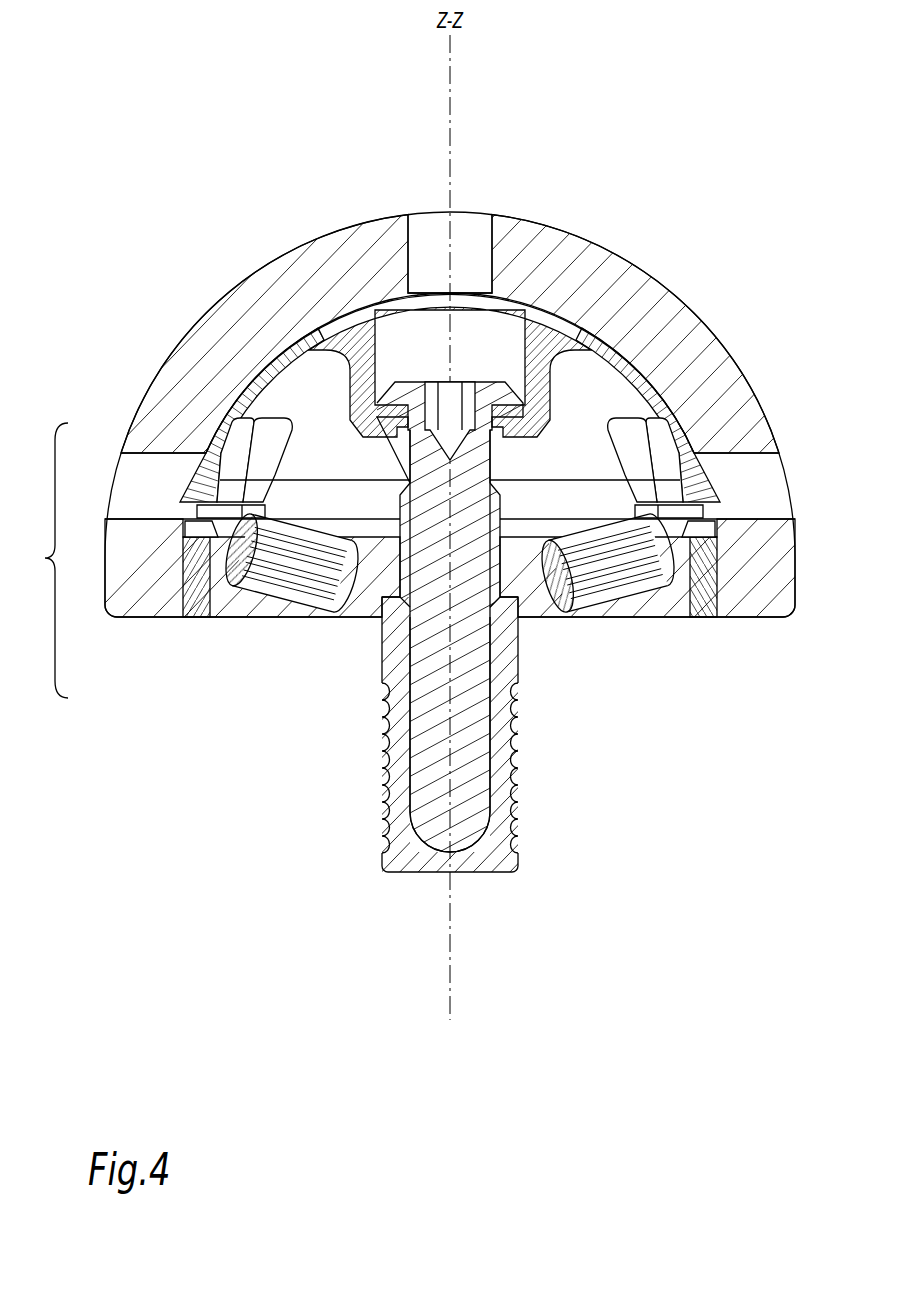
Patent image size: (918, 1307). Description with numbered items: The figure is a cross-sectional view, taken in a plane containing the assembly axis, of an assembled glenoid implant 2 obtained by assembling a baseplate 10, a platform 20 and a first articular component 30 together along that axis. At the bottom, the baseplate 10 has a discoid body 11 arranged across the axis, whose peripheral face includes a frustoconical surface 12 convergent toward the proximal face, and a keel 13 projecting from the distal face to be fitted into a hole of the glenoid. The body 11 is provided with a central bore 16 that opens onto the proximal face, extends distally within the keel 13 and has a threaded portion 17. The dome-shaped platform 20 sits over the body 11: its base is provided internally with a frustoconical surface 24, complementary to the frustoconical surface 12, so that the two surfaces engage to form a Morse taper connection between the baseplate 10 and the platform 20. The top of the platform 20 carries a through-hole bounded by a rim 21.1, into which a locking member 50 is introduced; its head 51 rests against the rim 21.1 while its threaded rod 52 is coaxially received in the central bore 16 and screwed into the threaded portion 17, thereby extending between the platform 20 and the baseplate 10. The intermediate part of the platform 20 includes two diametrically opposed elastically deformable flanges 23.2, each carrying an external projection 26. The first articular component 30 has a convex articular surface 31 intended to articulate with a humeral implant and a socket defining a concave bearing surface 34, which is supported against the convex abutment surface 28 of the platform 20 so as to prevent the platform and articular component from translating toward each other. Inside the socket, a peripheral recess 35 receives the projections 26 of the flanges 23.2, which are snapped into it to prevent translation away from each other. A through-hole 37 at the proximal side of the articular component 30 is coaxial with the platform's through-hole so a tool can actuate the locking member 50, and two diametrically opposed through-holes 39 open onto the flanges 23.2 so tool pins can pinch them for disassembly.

The glenoid implant 2 is at (47, 560).
The baseplate 10 is at (199, 601).
The body 11 is at (350, 608).
The frustoconical surface 12 is at (677, 602).
The keel 13 is at (387, 862).
The central bore 16 is at (516, 521).
The threaded portion 17 is at (485, 610).
The platform 20 is at (171, 572).
The rim 21.1 is at (510, 427).
The flange 23.2 is at (223, 420).
The frustoconical surface 24 is at (637, 607).
The projection 26 is at (717, 500).
The convex abutment surface 28 is at (325, 323).
The first articular component 30 is at (138, 403).
The convex articular surface 31 is at (605, 243).
The concave bearing surface 34 is at (357, 326).
The recess 35 is at (723, 478).
The through-hole 37 is at (490, 228).
The through-hole 39 is at (755, 455).
The locking member 50 is at (388, 510).
The head 51 is at (487, 395).
The threaded rod 52 is at (473, 523).